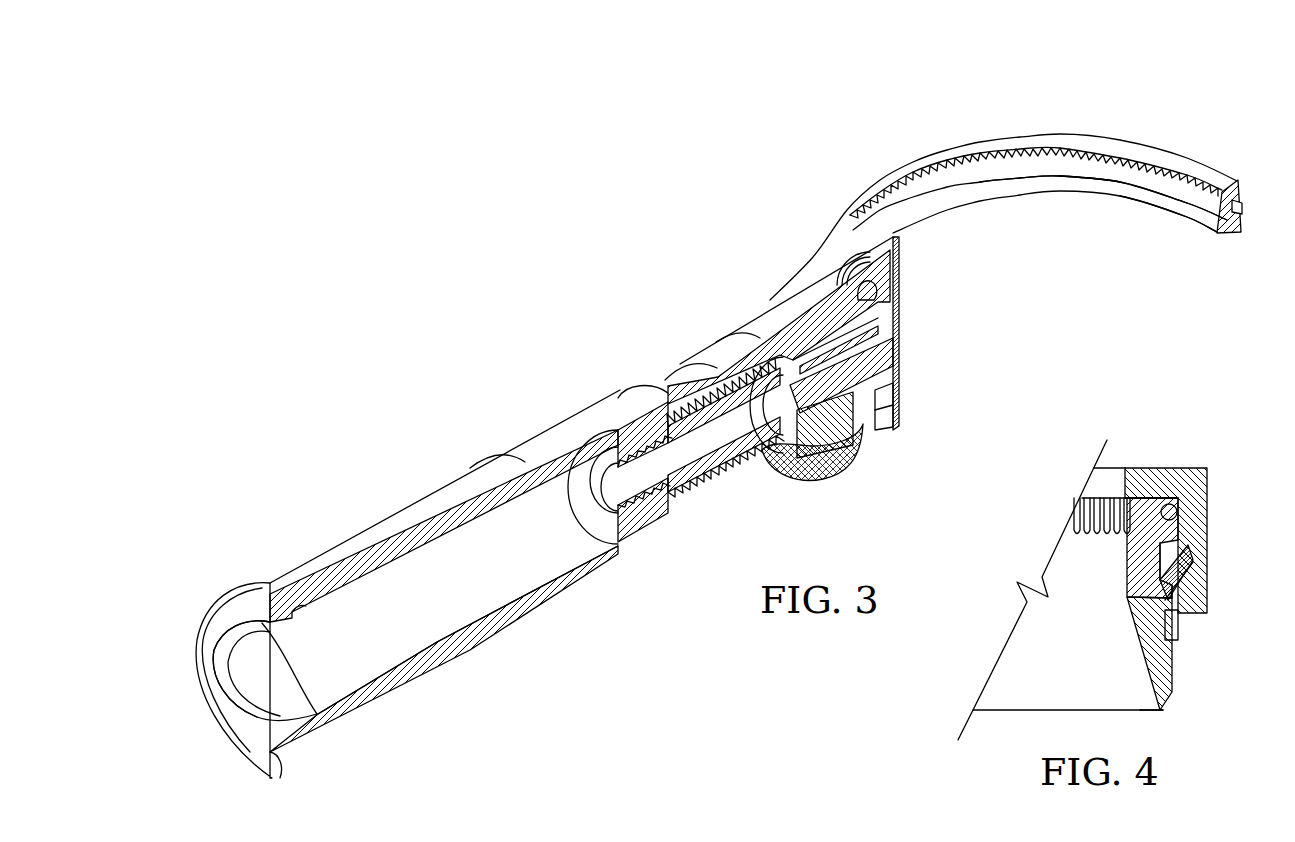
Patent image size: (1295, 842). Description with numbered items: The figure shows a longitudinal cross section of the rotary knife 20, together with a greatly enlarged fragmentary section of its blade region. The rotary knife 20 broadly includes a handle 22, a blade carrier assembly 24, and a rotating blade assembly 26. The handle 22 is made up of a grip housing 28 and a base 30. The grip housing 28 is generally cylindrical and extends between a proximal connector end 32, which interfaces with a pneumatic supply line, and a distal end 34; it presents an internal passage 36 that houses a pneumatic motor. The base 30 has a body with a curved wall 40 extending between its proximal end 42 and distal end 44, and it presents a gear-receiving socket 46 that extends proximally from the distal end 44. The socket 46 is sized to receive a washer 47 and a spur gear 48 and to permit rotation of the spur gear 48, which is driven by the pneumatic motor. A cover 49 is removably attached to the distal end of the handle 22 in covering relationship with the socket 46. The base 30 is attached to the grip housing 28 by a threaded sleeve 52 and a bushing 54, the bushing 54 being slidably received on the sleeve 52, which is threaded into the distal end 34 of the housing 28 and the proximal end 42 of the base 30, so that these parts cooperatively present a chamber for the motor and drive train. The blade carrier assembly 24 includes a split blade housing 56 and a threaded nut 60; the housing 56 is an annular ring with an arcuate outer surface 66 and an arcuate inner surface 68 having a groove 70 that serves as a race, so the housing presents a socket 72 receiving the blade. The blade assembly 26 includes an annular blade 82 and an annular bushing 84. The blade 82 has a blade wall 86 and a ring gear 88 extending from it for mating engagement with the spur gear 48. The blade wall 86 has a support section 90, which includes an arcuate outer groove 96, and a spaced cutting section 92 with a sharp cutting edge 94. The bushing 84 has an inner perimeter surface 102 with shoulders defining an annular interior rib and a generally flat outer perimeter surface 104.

In FIG. 3, the rotary knife 20 is at (482, 268).
In FIG. 3, the handle 22 is at (408, 584).
In FIG. 3, the blade carrier assembly 24 is at (950, 150).
In FIG. 3, the rotating blade assembly 26 is at (1170, 210).
In FIG. 3, the grip housing 28 is at (470, 632).
In FIG. 3, the base 30 is at (783, 297).
In FIG. 3, the proximal connector end 32 is at (249, 530).
In FIG. 3, the distal end 34 is at (570, 378).
In FIG. 3, the internal passage 36 is at (520, 563).
In FIG. 3, the curved wall 40 is at (757, 318).
In FIG. 3, the proximal end 42 is at (590, 358).
In FIG. 3, the distal end 44 is at (767, 205).
In FIG. 3, the gear-receiving socket 46 is at (770, 420).
In FIG. 3, the washer 47 is at (893, 385).
In FIG. 3, the spur gear 48 is at (893, 352).
In FIG. 3, the cover 49 is at (900, 322).
In FIG. 3, the threaded sleeve 52 is at (650, 522).
In FIG. 3, the bushing 54 is at (690, 480).
In FIG. 3, the split blade housing 56 is at (1160, 150).
In FIG. 3, the threaded nut 60 is at (860, 458).
In FIG. 4, the arcuate outer surface 66 is at (1207, 540).
In FIG. 4, the arcuate inner surface 68 is at (1169, 505).
In FIG. 4, the groove 70 is at (1218, 638).
In FIG. 4, the socket 72 is at (1187, 612).
In FIG. 3, the annular blade 82 is at (1137, 190).
In FIG. 4, the annular blade 82 is at (1040, 650).
In FIG. 3, the annular bushing 84 is at (1240, 210).
In FIG. 4, the annular bushing 84 is at (1190, 602).
In FIG. 3, the blade wall 86 is at (1097, 181).
In FIG. 4, the blade wall 86 is at (1049, 527).
In FIG. 3, the ring gear 88 is at (1065, 152).
In FIG. 4, the ring gear 88 is at (1140, 508).
In FIG. 3, the support section 90 is at (1213, 212).
In FIG. 4, the support section 90 is at (1127, 515).
In FIG. 3, the cutting section 92 is at (1053, 190).
In FIG. 4, the cutting section 92 is at (1163, 678).
In FIG. 3, the sharp cutting edge 94 is at (1198, 222).
In FIG. 4, the sharp cutting edge 94 is at (1157, 712).
In FIG. 4, the arcuate outer groove 96 is at (1170, 598).
In FIG. 4, the inner perimeter surface 102 is at (1160, 573).
In FIG. 4, the outer perimeter surface 104 is at (1185, 582).